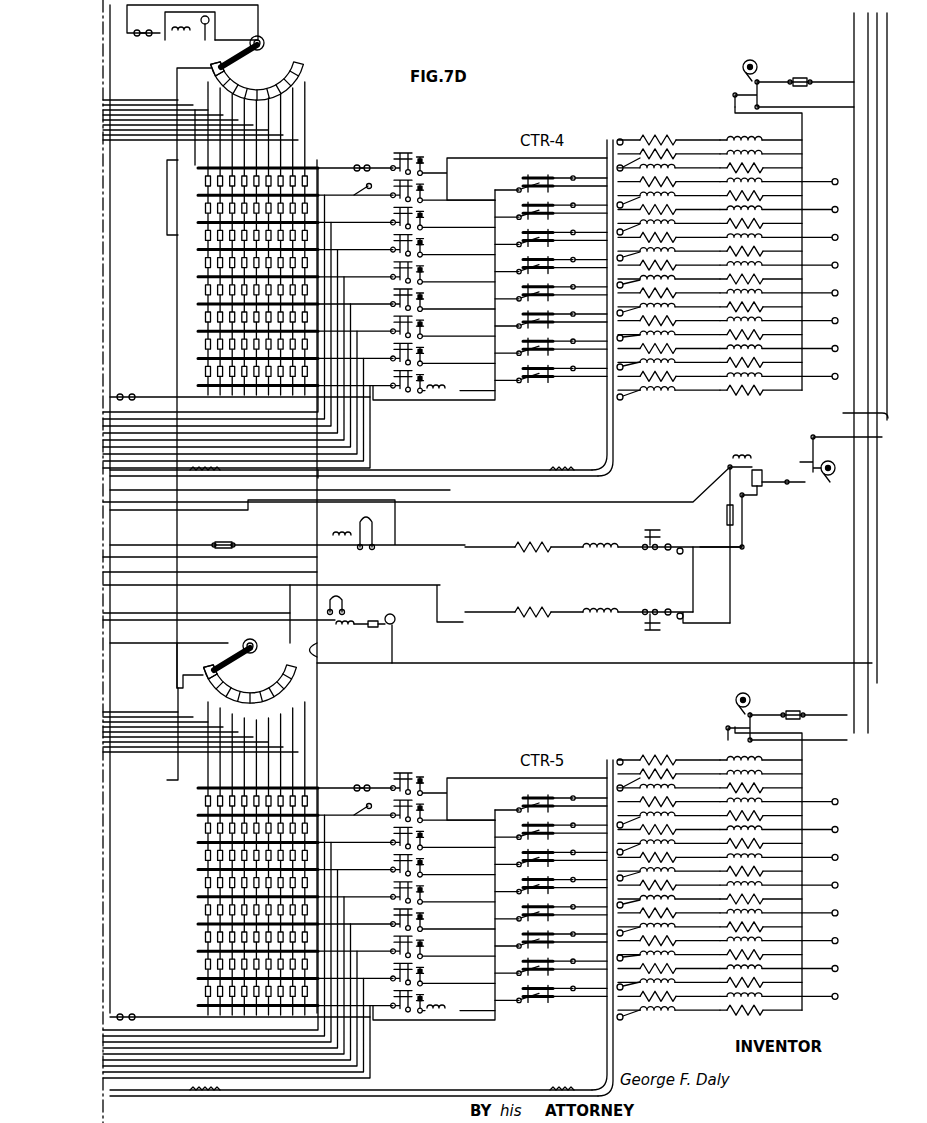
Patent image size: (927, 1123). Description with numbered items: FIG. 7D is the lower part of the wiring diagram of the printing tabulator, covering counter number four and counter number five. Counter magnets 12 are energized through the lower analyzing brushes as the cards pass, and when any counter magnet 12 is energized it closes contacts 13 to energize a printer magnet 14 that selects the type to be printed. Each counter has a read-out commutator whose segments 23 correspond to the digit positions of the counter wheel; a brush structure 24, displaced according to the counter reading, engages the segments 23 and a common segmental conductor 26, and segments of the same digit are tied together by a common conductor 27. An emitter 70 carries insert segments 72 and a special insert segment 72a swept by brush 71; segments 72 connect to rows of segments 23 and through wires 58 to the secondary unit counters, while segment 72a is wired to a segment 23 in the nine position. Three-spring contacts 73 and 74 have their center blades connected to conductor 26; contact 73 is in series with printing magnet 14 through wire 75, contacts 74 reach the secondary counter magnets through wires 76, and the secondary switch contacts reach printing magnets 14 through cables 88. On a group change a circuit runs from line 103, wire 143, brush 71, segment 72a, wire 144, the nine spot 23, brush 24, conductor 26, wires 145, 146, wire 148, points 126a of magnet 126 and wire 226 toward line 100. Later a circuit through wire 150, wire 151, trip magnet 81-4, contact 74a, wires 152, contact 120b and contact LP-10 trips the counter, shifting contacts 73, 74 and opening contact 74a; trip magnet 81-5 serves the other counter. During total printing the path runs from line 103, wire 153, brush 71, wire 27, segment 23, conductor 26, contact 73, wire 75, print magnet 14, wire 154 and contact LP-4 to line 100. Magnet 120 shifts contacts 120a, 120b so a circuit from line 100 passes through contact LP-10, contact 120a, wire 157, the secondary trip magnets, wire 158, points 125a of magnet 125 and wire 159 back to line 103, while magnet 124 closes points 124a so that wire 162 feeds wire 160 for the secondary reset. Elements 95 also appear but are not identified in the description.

The counter magnet 12 is at (670, 150).
The contacts 13 is at (521, 248).
The printer magnet 14 is at (750, 180).
The commutator segments 23 is at (205, 362).
The brush structure 24 is at (348, 167).
The common segmental conductor 26 is at (198, 278).
The common conductor 27 is at (300, 119).
The wires 58 is at (164, 120).
The emitter commutator 70 is at (300, 72).
The emitter brush 71 is at (264, 48).
The insert segments 72 is at (240, 62).
The special insert segment 72a is at (222, 56).
The three-spring contact 73 is at (424, 155).
The three-spring contacts 74 is at (400, 152).
The contact 74a is at (648, 628).
The wire 75 is at (455, 190).
The wires 76 is at (370, 444).
The trip magnet of counter four 81-4 is at (442, 395).
The trip magnet of counter five 81-5 is at (428, 1012).
The cables 88 is at (215, 476).
The terminals 95 is at (828, 190).
The line 100 is at (848, 413).
The line 103 is at (110, 316).
The magnet 120 is at (736, 452).
The contact 120a is at (764, 470).
The contact 120b is at (744, 502).
The magnet 124 is at (178, 33).
The relay points 124a is at (209, 22).
The magnet 125 is at (350, 526).
The relay points 125a is at (378, 530).
The magnet 126 is at (395, 624).
The points 126a is at (345, 606).
The wire 143 is at (136, 643).
The wire 144 is at (178, 688).
The wires 145 is at (320, 745).
The wire 146 is at (205, 613).
The wire 148 is at (247, 646).
The wire 150 is at (265, 590).
The wire 151 is at (120, 590).
The wires 152 is at (700, 560).
The wire 153 is at (250, 23).
The wire 154 is at (805, 125).
The wire 157 is at (160, 515).
The wire 158 is at (292, 548).
The wire 159 is at (372, 496).
The wire 160 is at (137, 36).
The wire 162 is at (178, 14).
The wire 226 is at (877, 40).
The cam contact LP-4 is at (770, 99).
The cam contact LP-10 is at (825, 478).